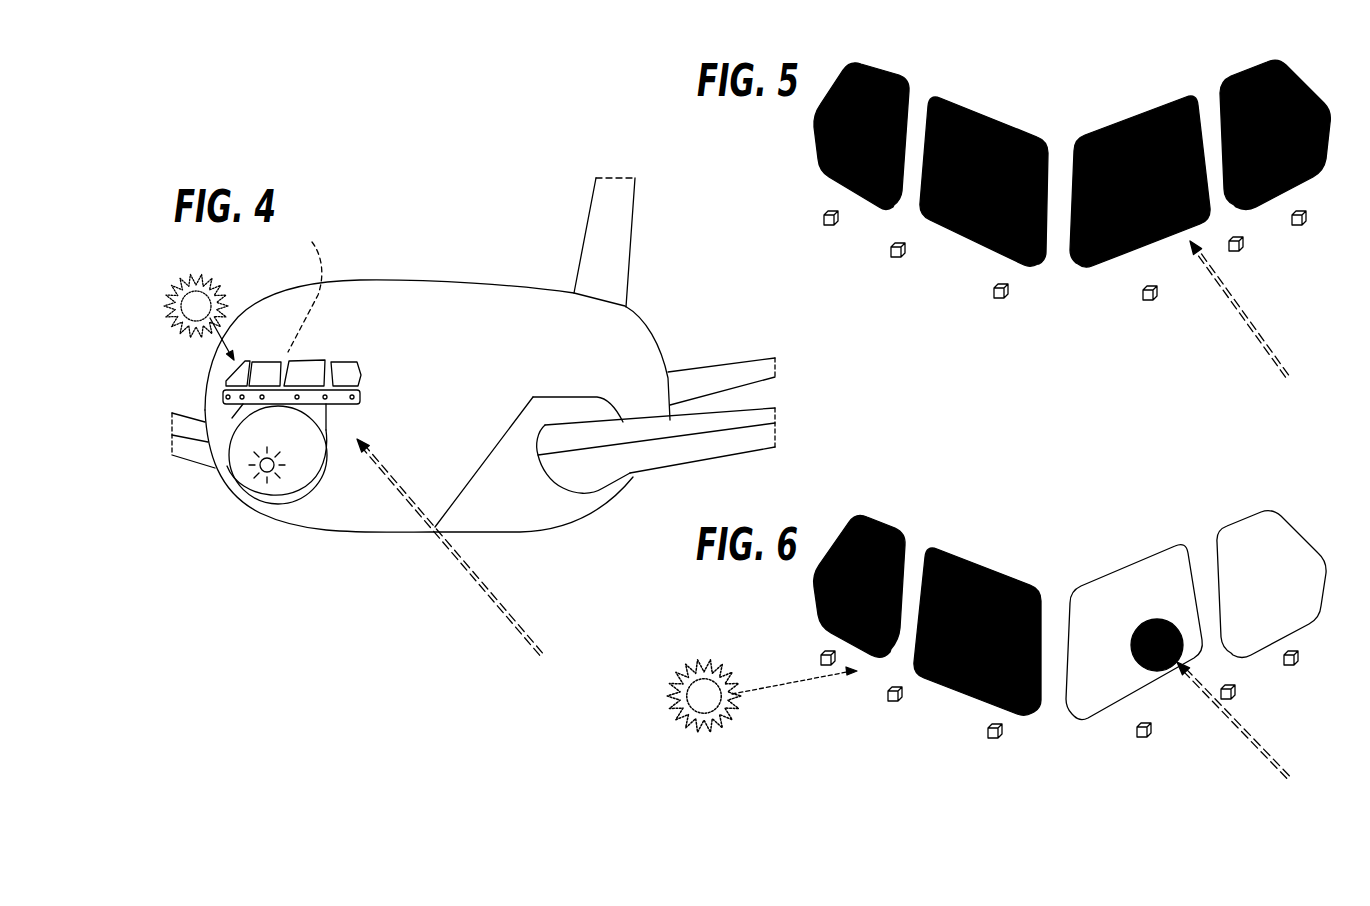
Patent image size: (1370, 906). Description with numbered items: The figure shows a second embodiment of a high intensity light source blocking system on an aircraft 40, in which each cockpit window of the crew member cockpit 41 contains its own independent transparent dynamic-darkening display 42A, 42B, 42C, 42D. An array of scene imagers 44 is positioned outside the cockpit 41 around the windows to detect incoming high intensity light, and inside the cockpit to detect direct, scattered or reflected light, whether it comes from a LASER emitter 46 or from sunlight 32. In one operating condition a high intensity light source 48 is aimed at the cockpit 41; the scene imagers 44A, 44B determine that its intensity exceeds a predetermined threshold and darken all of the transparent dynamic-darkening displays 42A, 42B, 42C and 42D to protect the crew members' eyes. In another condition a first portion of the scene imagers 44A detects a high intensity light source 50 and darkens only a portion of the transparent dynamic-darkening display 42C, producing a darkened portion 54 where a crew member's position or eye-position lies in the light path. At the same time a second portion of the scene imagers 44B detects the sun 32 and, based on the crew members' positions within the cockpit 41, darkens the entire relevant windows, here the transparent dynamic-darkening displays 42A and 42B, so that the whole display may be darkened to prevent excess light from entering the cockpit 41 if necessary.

In FIG. 4, the sunlight 32 is at (199, 318).
In FIG. 6, the sunlight 32 is at (762, 696).
In FIG. 4, the aircraft 40 is at (309, 281).
In FIG. 4, the cockpit 41 is at (305, 288).
In FIG. 4, the transparent dynamic-darkening display 42A is at (232, 376).
In FIG. 5, the transparent dynamic-darkening display 42A is at (892, 76).
In FIG. 6, the transparent dynamic-darkening display 42A is at (889, 527).
In FIG. 4, the transparent dynamic-darkening display 42B is at (252, 380).
In FIG. 5, the transparent dynamic-darkening display 42B is at (975, 109).
In FIG. 6, the transparent dynamic-darkening display 42B is at (969, 556).
In FIG. 4, the transparent dynamic-darkening display 42C is at (300, 372).
In FIG. 5, the transparent dynamic-darkening display 42C is at (1151, 111).
In FIG. 6, the transparent dynamic-darkening display 42C is at (1145, 562).
In FIG. 4, the transparent dynamic-darkening display 42D is at (347, 372).
In FIG. 5, the transparent dynamic-darkening display 42D is at (1240, 74).
In FIG. 6, the transparent dynamic-darkening display 42D is at (1237, 531).
In FIG. 4, the scene imagers 44 is at (246, 498).
In FIG. 5, the first portion of the scene imagers 44A is at (834, 227).
In FIG. 6, the first portion of the scene imagers 44A is at (1237, 694).
In FIG. 5, the second portion of the scene imagers 44B is at (1246, 250).
In FIG. 6, the second portion of the scene imagers 44B is at (831, 669).
In FIG. 4, the LASER emitter 46 is at (466, 576).
In FIG. 5, the high intensity light source 48 is at (1272, 363).
In FIG. 6, the high intensity light source 50 is at (1254, 746).
In FIG. 6, the darkened portion 54 is at (1141, 620).